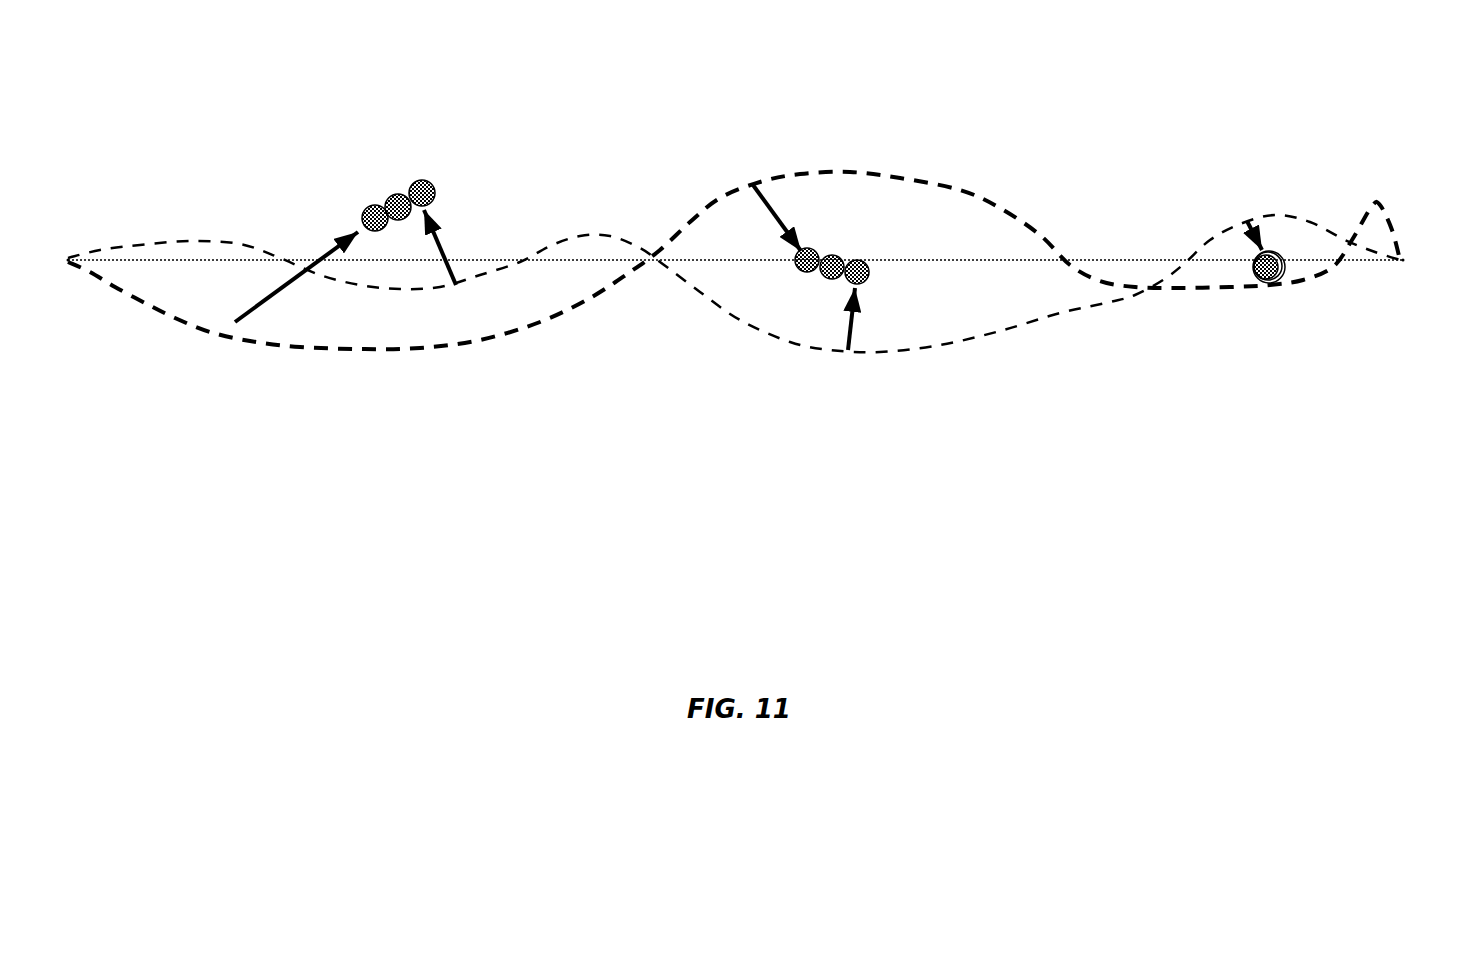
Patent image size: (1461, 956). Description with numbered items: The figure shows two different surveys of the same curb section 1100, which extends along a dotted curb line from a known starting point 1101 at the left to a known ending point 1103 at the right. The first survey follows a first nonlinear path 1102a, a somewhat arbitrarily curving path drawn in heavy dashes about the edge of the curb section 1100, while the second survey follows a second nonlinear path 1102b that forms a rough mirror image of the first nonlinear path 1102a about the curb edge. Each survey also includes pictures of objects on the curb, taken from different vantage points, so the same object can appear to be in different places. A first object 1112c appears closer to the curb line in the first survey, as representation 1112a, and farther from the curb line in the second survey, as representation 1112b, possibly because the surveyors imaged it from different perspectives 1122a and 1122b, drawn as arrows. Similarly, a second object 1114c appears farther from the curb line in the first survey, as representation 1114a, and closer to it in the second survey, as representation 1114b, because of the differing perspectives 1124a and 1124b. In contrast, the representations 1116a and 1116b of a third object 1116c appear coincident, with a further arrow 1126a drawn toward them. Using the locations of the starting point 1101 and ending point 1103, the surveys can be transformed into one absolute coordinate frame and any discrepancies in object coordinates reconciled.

The curb section 1100 is at (735, 286).
The starting point 1101 is at (69, 256).
The ending point 1103 is at (1403, 263).
The first nonlinear path 1102a is at (734, 314).
The second nonlinear path 1102b is at (734, 341).
The first object representation in first survey 1112a is at (370, 205).
The first object representation in second survey 1112b is at (427, 180).
The first object 1112c is at (397, 194).
The second object representation in first survey 1114a is at (807, 248).
The second object representation in second survey 1114b is at (862, 261).
The second object 1114c is at (834, 255).
The third object representation in first survey 1116a is at (1253, 286).
The third object representation in second survey 1116b is at (1275, 289).
The third object 1116c is at (1265, 290).
The first perspective of first object 1122a is at (258, 305).
The second perspective of first object 1122b is at (453, 250).
The first perspective of second object 1124a is at (749, 218).
The second perspective of second object 1124b is at (894, 319).
The converged heading vector 1126a is at (1251, 215).